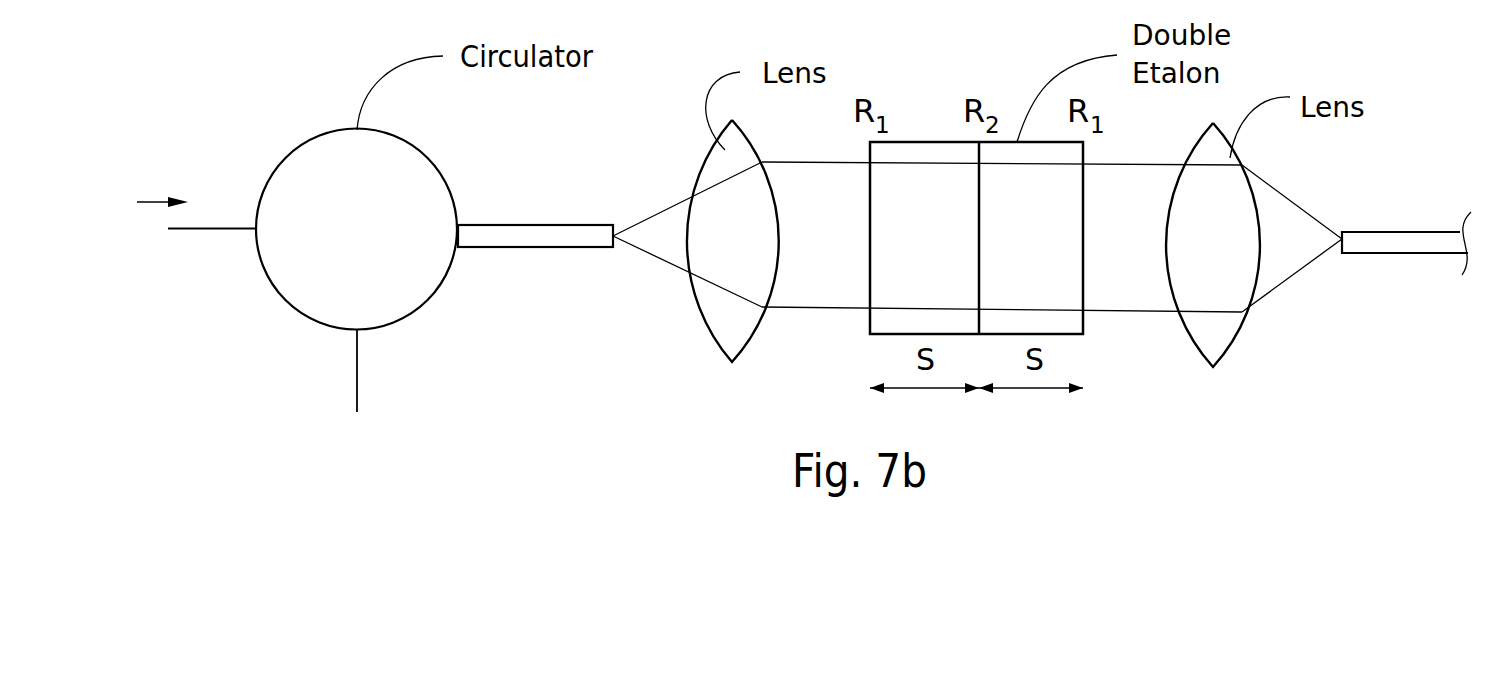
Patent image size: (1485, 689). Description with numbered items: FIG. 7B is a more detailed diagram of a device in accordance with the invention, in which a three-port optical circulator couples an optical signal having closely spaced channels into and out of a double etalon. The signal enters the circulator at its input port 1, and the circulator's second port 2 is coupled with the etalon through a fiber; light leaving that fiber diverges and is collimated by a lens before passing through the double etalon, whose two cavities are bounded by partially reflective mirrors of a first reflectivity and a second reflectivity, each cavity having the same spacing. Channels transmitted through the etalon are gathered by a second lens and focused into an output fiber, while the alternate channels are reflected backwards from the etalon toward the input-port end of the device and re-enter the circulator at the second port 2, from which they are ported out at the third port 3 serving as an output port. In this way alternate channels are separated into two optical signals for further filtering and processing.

The input port 1 is at (212, 205).
The second port 2 is at (535, 215).
The third port 3 is at (343, 370).